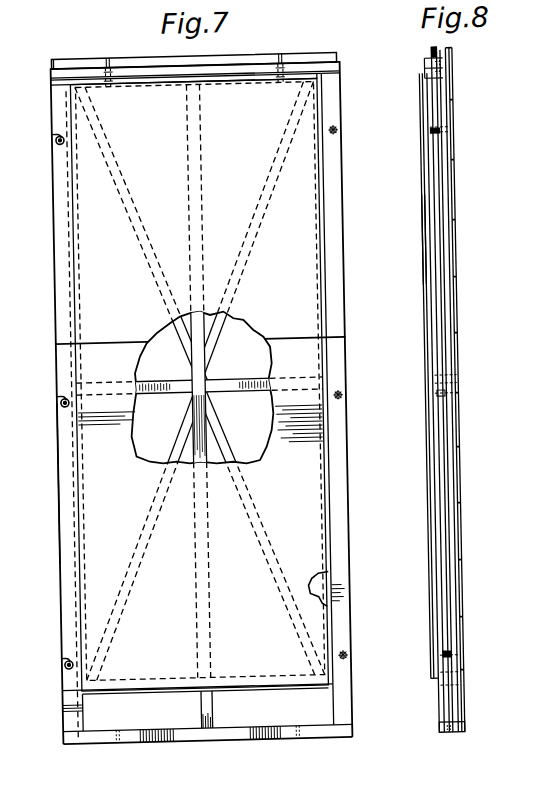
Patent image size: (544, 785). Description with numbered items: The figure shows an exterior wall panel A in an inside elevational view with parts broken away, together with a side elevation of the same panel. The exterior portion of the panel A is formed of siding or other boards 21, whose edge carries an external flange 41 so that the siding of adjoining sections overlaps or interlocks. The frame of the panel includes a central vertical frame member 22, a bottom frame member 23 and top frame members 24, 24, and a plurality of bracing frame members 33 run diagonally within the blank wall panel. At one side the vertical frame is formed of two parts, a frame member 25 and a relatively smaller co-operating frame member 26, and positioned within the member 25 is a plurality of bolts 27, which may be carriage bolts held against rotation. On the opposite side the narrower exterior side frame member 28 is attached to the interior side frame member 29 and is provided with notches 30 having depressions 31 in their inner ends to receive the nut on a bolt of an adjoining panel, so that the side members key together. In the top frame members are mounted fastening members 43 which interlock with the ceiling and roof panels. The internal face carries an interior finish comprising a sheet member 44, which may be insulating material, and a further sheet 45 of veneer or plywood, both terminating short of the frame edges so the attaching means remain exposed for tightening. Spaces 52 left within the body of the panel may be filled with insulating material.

In FIG. 7, the siding boards 21 is at (80, 57).
In FIG. 8, the siding boards 21 is at (457, 192).
In FIG. 7, the central vertical frame member 22 is at (214, 327).
In FIG. 7, the bottom frame member 23 is at (267, 737).
In FIG. 8, the bottom frame member 23 is at (436, 734).
In FIG. 7, the top frame members 24 is at (57, 73).
In FIG. 8, the top frame members 24 is at (431, 77).
In FIG. 7, the frame member 25 is at (340, 109).
In FIG. 7, the co-operating frame member 26 is at (328, 91).
In FIG. 7, the bolts 27 is at (343, 134).
In FIG. 8, the bolts 27 is at (436, 137).
In FIG. 7, the exterior side frame member 28 is at (72, 694).
In FIG. 7, the interior side frame member 29 is at (57, 556).
In FIG. 7, the notches 30 is at (60, 140).
In FIG. 7, the depressions 31 is at (57, 131).
In FIG. 7, the bracing frame members 33 is at (183, 357).
In FIG. 7, the external flange 41 is at (58, 58).
In FIG. 7, the fastening members 43 is at (114, 56).
In FIG. 8, the fastening members 43 is at (444, 54).
In FIG. 7, the sheet member 44 is at (320, 590).
In FIG. 8, the sheet member 44 is at (430, 244).
In FIG. 7, the further sheet 45 is at (302, 560).
In FIG. 8, the further sheet 45 is at (427, 278).
In FIG. 7, the spaces 52 is at (141, 409).
In FIG. 7, the exterior wall panel A is at (322, 50).
In FIG. 8, the exterior wall panel A is at (462, 96).